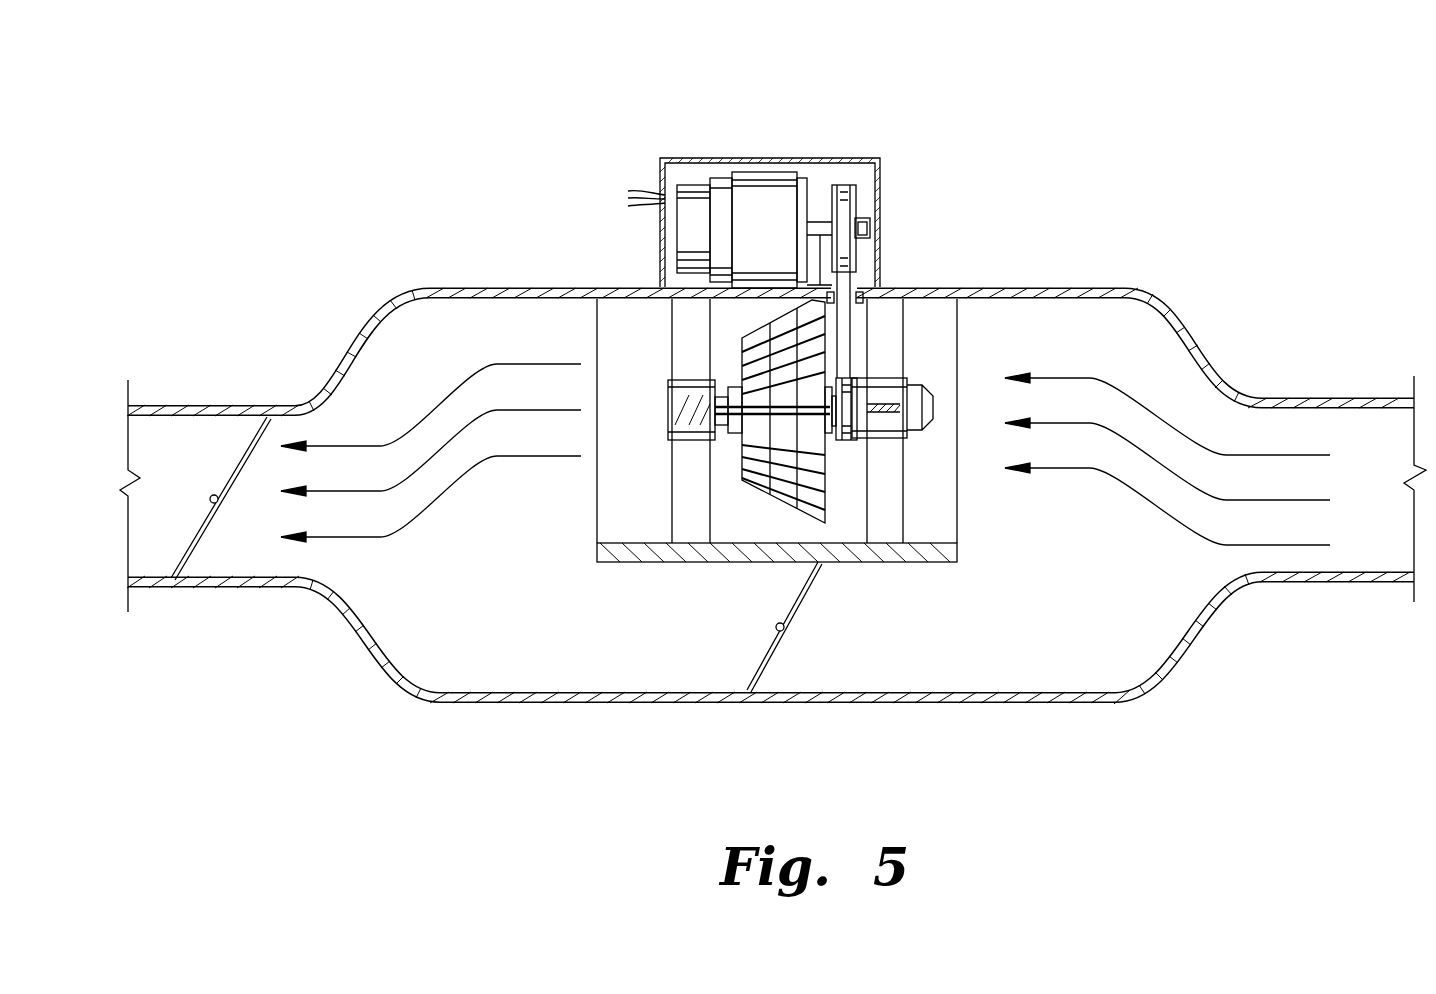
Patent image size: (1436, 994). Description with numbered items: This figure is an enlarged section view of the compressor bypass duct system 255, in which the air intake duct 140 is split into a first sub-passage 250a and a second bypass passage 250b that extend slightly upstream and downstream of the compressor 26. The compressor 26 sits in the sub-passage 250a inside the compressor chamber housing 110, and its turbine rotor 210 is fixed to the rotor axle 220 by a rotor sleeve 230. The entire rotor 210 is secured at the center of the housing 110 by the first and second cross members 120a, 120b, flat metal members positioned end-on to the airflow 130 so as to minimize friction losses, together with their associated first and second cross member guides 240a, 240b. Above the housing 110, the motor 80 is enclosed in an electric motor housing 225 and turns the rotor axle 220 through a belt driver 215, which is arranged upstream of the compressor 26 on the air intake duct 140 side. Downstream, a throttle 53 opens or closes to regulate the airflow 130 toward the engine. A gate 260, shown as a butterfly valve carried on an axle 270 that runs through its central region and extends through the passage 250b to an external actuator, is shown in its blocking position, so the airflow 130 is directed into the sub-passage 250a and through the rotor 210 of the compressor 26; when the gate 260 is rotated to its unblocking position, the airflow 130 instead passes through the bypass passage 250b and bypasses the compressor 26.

The compressor 26 is at (813, 340).
The throttle 53 is at (242, 439).
The motor 80 is at (756, 172).
The compressor chamber housing 110 is at (472, 291).
The first cross member 120a is at (897, 334).
The second cross member 120b is at (688, 323).
The airflow 130 is at (383, 382).
The air intake duct 140 is at (1356, 398).
The turbine rotor 210 is at (783, 497).
The belt driver 215 is at (845, 257).
The rotor axle 220 is at (722, 423).
The electric motor housing 225 is at (845, 157).
The rotor sleeve 230 is at (736, 428).
The first cross member guide 240a is at (888, 423).
The second cross member guide 240b is at (672, 423).
The first sub-passage 250a is at (938, 348).
The second bypass passage 250b is at (1062, 652).
The compressor bypass duct system 255 is at (318, 120).
The gate 260 is at (765, 663).
The axle 270 is at (782, 628).